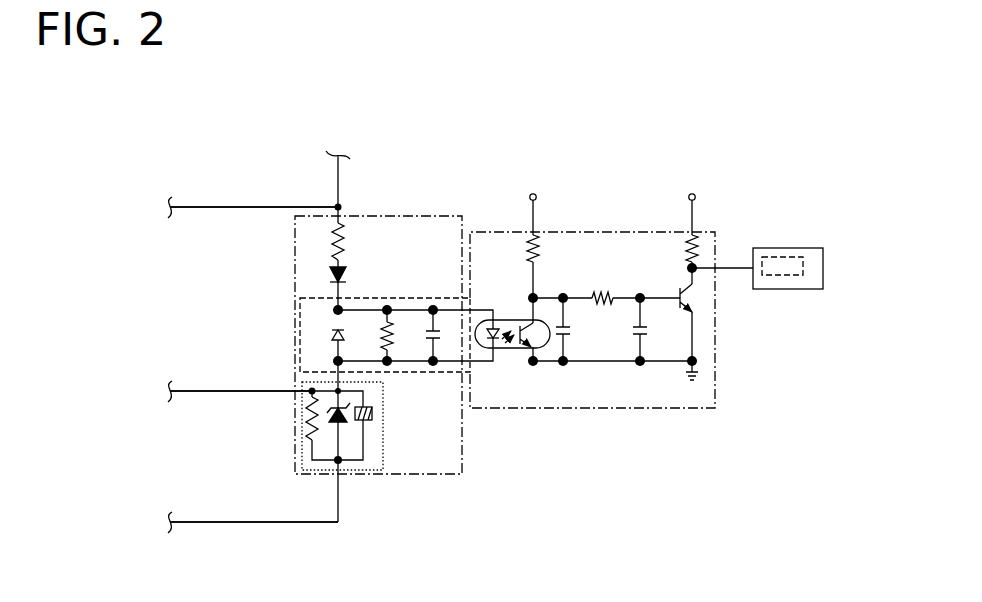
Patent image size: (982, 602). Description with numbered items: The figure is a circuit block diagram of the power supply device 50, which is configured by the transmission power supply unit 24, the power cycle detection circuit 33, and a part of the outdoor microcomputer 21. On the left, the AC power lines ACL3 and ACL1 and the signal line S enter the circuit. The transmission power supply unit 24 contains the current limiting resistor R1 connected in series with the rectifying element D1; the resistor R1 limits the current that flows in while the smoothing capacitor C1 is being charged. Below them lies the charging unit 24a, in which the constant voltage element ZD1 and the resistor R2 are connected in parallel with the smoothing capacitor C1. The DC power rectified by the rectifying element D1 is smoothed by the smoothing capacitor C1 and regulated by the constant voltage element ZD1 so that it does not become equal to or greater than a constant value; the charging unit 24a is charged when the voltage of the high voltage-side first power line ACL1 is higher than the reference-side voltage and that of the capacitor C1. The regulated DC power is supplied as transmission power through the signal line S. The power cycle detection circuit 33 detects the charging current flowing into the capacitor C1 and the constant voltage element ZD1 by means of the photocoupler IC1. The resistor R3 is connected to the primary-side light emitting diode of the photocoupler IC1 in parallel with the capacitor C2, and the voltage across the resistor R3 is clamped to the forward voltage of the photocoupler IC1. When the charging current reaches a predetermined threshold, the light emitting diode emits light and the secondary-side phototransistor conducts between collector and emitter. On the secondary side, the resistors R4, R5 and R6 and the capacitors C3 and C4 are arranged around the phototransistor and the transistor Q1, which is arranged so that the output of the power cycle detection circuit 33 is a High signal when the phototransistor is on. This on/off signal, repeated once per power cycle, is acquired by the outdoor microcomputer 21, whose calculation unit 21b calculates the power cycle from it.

The first power line ACL3 is at (252, 204).
The high voltage-side first power line ACL1 is at (254, 540).
The signal line S is at (251, 388).
The power supply device 50 is at (545, 140).
The transmission power supply unit 24 is at (413, 213).
The charging unit 24a is at (297, 423).
The power cycle detection circuit 33 is at (499, 230).
The current limiting resistor R1 is at (348, 240).
The rectifying element D1 is at (348, 278).
The resistor R3 is at (384, 335).
The capacitor C2 is at (428, 344).
The resistor R2 is at (308, 437).
The constant voltage element ZD1 is at (347, 418).
The smoothing capacitor C1 is at (373, 413).
The photocoupler IC1 is at (517, 343).
The resistor R4 is at (530, 249).
The resistor R5 is at (688, 249).
The resistor R6 is at (606, 281).
The transistor Q1 is at (680, 290).
The capacitor C3 is at (567, 331).
The capacitor C4 is at (645, 331).
The outdoor microcomputer 21 is at (788, 292).
The calculation unit 21b is at (786, 250).